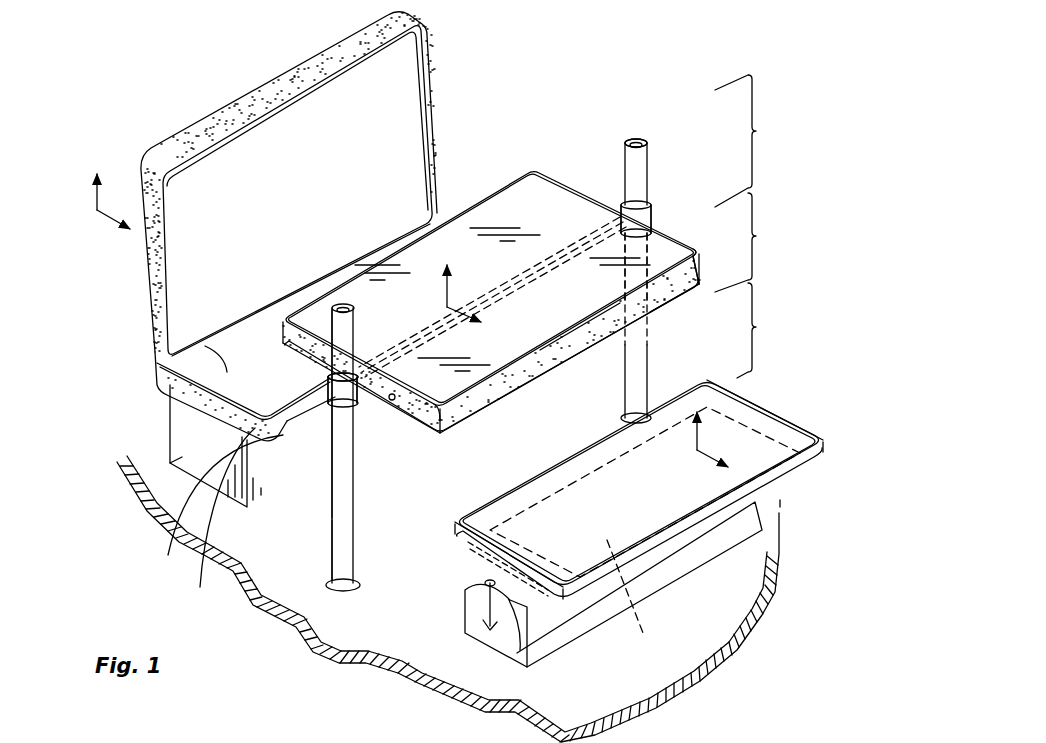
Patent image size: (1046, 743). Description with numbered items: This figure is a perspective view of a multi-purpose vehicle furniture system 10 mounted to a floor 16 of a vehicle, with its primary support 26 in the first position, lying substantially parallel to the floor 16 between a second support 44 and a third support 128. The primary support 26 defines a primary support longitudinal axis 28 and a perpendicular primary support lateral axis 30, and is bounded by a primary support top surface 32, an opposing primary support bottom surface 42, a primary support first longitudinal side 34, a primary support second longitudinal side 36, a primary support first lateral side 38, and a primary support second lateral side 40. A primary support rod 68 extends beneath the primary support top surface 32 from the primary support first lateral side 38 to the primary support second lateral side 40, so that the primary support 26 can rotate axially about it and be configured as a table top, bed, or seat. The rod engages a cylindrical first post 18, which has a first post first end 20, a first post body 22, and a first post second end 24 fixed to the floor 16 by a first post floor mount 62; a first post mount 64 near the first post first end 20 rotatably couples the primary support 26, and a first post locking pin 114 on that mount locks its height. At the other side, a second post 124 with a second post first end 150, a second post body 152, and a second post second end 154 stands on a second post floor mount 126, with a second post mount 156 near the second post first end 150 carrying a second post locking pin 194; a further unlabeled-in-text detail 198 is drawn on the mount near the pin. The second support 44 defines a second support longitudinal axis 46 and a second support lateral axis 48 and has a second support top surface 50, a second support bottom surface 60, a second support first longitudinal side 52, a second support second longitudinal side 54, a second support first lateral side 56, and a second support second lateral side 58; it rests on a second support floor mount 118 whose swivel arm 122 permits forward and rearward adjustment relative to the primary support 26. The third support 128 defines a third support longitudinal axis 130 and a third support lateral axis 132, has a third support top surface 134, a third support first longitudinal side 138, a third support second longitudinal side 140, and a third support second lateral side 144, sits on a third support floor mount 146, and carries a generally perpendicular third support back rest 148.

The multi-purpose vehicle furniture system 10 is at (654, 46).
The floor 16 is at (376, 633).
The first post 18 is at (653, 157).
The first post first end 20 is at (755, 141).
The first post body 22 is at (755, 242).
The first post second end 24 is at (762, 330).
The primary support 26 is at (550, 157).
The primary support longitudinal axis 28 is at (445, 290).
The primary support lateral axis 30 is at (445, 309).
The primary support top surface 32 is at (662, 243).
The primary support first longitudinal side 34 is at (577, 351).
The primary support second longitudinal side 36 is at (497, 191).
The primary support first lateral side 38 is at (422, 424).
The primary support second lateral side 40 is at (688, 247).
The primary support bottom surface 42 is at (677, 303).
The second support 44 is at (806, 408).
The second support longitudinal axis 46 is at (697, 438).
The second support lateral axis 48 is at (697, 452).
The second support top surface 50 is at (704, 378).
The second support first longitudinal side 52 is at (690, 528).
The second support second longitudinal side 54 is at (533, 478).
The second support first lateral side 56 is at (757, 392).
The second support second lateral side 58 is at (458, 546).
The second support bottom surface 60 is at (639, 598).
The first post floor mount 62 is at (621, 415).
The first post mount 64 is at (640, 205).
The primary support rod 68 is at (583, 238).
The first post locking pin 114 is at (622, 225).
The second support floor mount 118 is at (502, 647).
The swivel arm 122 is at (484, 606).
The second post 124 is at (360, 555).
The second post floor mount 126 is at (330, 587).
The third support 128 is at (180, 457).
The third support longitudinal axis 130 is at (94, 195).
The third support lateral axis 132 is at (104, 218).
The third support top surface 134 is at (160, 343).
The third support first longitudinal side 138 is at (215, 521).
The third support second longitudinal side 140 is at (156, 371).
The third support second lateral side 144 is at (212, 418).
The third support floor mount 146 is at (138, 475).
The third support back rest 148 is at (190, 132).
The second post first end 150 is at (328, 380).
The second post body 152 is at (327, 310).
The second post second end 154 is at (327, 520).
The second post mount 156 is at (358, 393).
The second post locking pin 194 is at (209, 509).
The fastener hole 198 is at (393, 402).